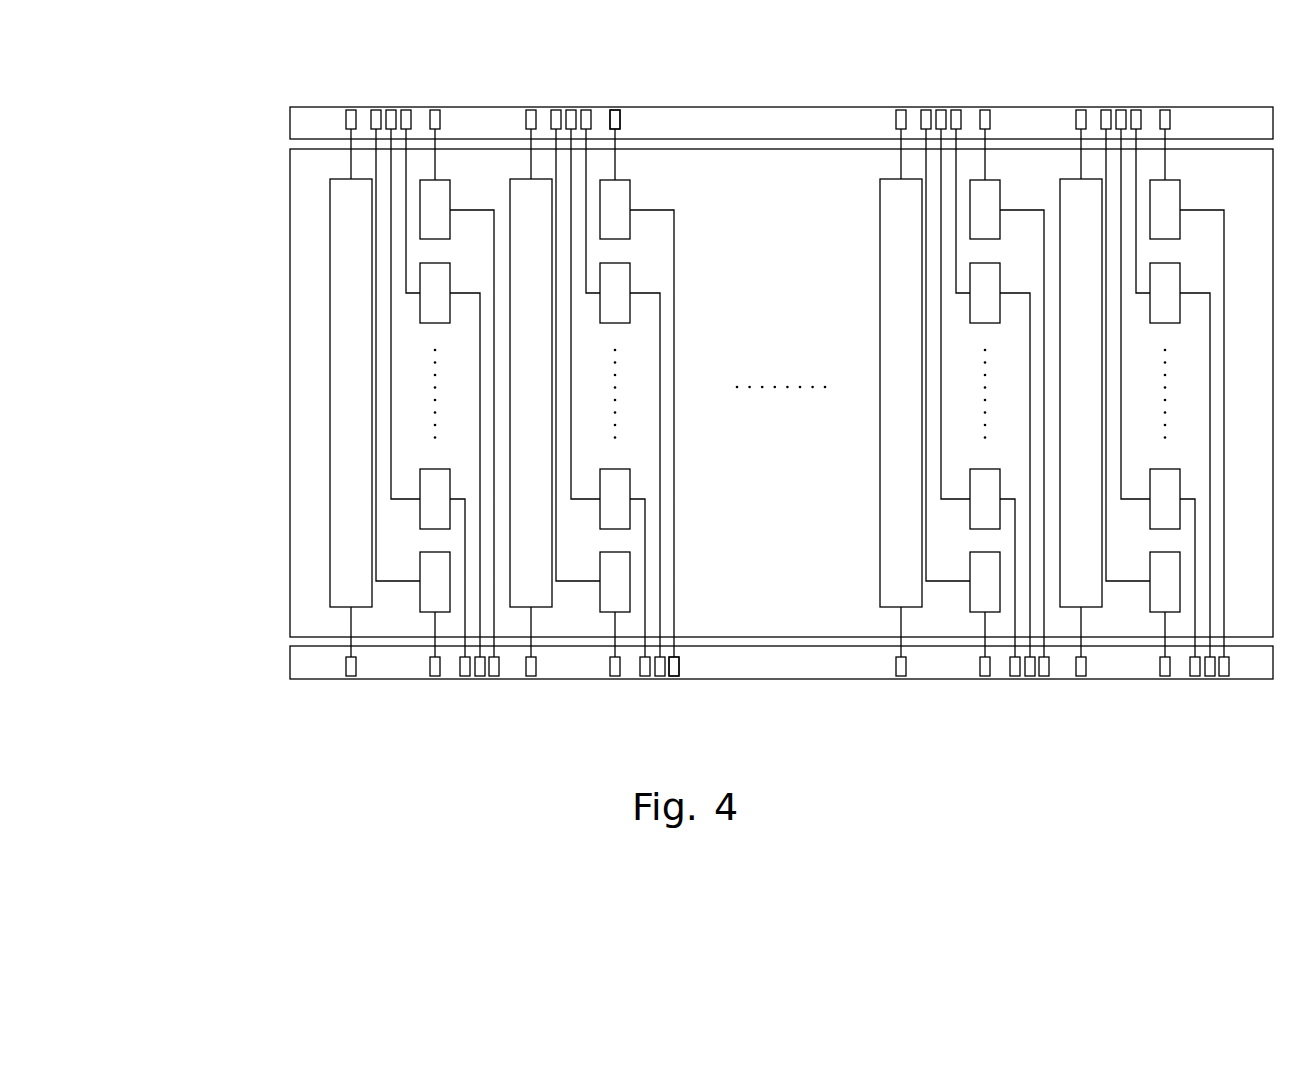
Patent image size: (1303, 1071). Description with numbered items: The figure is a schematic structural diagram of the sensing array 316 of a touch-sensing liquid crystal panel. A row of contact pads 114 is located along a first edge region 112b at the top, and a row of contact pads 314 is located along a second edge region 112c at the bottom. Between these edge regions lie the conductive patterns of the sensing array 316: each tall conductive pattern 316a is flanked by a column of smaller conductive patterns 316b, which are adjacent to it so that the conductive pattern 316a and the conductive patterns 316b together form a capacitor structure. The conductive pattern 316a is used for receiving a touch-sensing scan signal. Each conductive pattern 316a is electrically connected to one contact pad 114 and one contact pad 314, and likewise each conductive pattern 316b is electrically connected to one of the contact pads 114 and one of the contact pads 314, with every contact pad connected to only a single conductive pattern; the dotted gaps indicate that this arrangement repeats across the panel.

The first edge region 112b is at (1233, 116).
The second edge region 112c is at (1252, 667).
The contact pad 114 is at (613, 109).
The contact pad 314 is at (674, 678).
The sensing array 316 is at (313, 393).
The conductive pattern 316a is at (330, 433).
The conductive pattern 316b is at (420, 601).